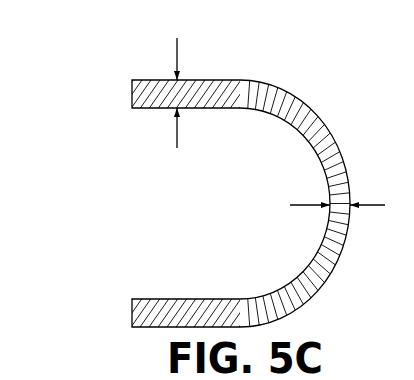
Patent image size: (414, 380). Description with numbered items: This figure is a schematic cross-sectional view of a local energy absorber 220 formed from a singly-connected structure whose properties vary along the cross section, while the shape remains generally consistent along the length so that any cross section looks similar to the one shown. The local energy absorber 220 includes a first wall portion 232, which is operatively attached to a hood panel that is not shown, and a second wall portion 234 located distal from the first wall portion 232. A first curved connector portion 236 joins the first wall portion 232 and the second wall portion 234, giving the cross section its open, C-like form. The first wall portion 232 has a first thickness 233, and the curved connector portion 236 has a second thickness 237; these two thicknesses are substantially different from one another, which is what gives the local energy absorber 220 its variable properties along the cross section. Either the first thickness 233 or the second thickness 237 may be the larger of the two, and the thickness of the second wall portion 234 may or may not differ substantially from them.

The local energy absorber 220 is at (155, 57).
The first wall portion 232 is at (196, 92).
The first thickness 233 is at (177, 132).
The second wall portion 234 is at (163, 313).
The first curved connector portion 236 is at (348, 186).
The second thickness 237 is at (372, 207).